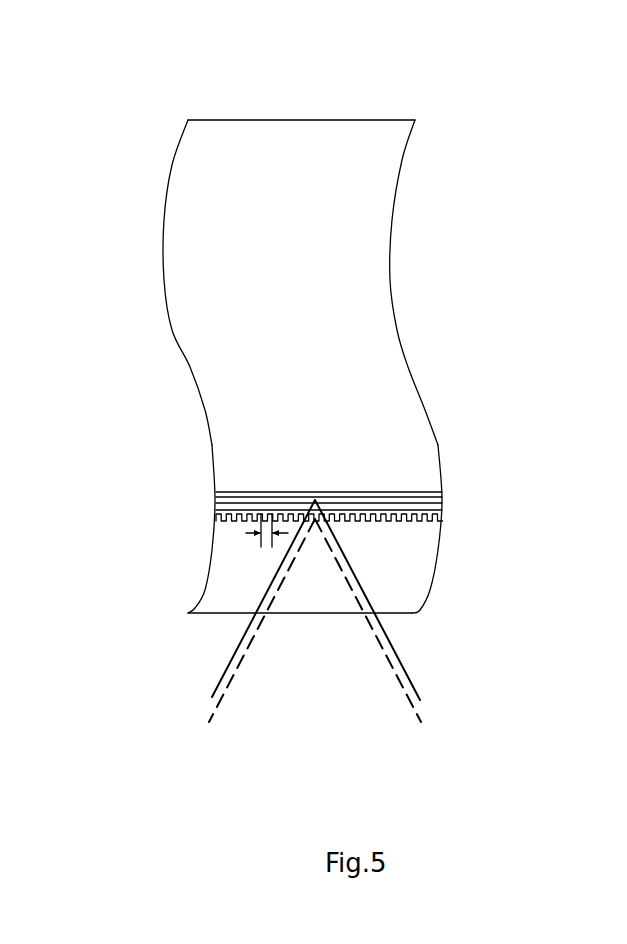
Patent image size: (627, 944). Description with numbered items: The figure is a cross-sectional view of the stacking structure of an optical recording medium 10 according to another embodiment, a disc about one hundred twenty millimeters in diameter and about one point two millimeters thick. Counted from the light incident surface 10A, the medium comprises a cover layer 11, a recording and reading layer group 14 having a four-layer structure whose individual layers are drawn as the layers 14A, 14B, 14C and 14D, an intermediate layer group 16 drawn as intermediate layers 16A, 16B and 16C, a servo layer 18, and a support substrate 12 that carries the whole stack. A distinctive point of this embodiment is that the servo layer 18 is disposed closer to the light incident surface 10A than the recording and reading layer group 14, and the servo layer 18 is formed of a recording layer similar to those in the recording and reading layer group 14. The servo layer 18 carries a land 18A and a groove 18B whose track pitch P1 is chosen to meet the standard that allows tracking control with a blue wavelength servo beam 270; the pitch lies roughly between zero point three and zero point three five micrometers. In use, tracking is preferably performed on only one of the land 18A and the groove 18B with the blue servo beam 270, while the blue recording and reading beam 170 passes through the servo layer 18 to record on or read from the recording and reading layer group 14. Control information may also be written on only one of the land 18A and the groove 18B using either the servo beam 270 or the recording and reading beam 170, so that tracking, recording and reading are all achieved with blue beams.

The optical recording medium 10 is at (287, 343).
The light incident surface 10A is at (204, 616).
The cover layer 11 is at (209, 597).
The support substrate 12 is at (352, 242).
The recording and reading layer group 14 is at (398, 481).
The first layer 14A is at (436, 492).
The second layer 14B is at (436, 497).
The third layer 14C is at (436, 502).
The fourth layer 14D is at (442, 509).
The intermediate layer group 16 is at (146, 485).
The first interface 16A is at (217, 493).
The second interface 16B is at (217, 498).
The third interface 16C is at (217, 505).
The servo layer 18 is at (389, 604).
The land 18A is at (405, 521).
The groove 18B is at (411, 521).
The grating pitch P1 is at (260, 535).
The blue recording and reading beam 170 is at (414, 686).
The blue servo beam 270 is at (383, 650).